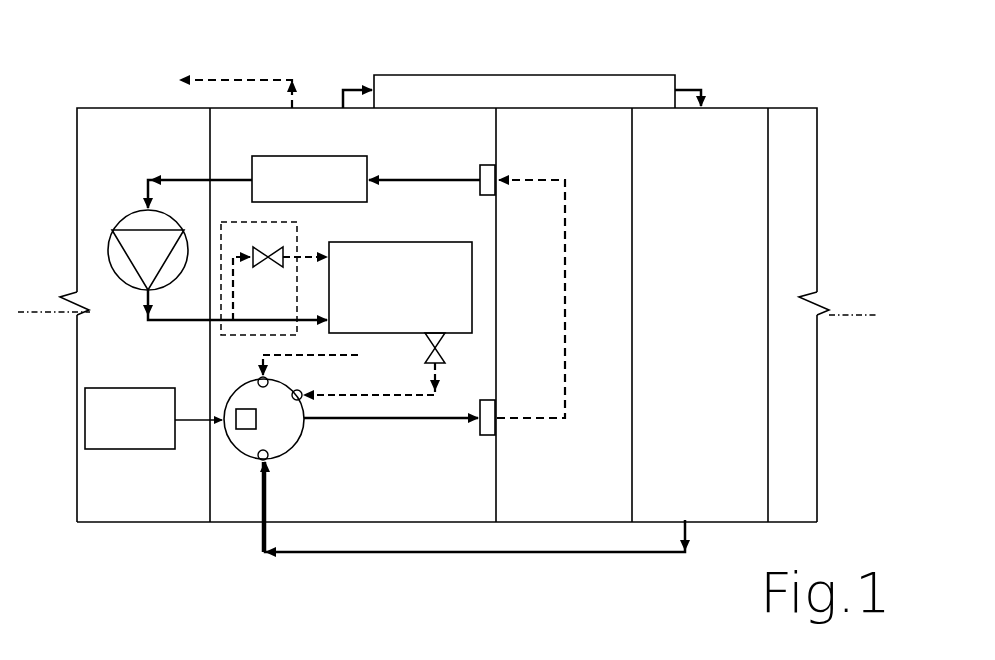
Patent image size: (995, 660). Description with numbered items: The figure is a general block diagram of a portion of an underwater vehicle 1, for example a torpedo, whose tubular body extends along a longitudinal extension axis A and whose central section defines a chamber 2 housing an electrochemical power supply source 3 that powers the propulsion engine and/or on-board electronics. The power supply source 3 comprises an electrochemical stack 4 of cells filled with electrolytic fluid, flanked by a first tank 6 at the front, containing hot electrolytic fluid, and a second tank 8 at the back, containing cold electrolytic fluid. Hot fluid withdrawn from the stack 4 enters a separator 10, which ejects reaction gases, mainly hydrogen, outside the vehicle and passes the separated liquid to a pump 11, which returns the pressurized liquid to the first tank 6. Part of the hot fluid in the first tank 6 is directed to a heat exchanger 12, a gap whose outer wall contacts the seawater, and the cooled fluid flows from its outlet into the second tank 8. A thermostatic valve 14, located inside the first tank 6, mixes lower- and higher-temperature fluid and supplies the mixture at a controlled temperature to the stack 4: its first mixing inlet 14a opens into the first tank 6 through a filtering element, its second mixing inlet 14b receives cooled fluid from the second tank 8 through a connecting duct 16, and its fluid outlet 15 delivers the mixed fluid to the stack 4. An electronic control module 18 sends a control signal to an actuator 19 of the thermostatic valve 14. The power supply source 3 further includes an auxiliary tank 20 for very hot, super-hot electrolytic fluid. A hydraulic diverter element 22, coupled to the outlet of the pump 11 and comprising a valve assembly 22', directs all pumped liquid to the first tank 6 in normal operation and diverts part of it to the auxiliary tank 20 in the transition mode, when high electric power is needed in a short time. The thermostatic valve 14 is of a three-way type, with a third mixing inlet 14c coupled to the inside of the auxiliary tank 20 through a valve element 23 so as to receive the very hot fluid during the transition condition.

The underwater vehicle 1 is at (423, 261).
The chamber 2 is at (228, 526).
The electrochemical power supply source 3 is at (315, 100).
The electrochemical stack 4 is at (608, 117).
The first tank 6 is at (391, 117).
The second tank 8 is at (745, 120).
The separator 10 is at (364, 160).
The pump 11 is at (122, 219).
The heat exchanger 12 is at (452, 82).
The thermostatic valve 14 is at (289, 446).
The first mixing inlet 14a is at (258, 380).
The second mixing inlet 14b is at (266, 460).
The third mixing inlet 14c is at (301, 392).
The fluid outlet 15 is at (311, 431).
The connecting duct 16 is at (345, 554).
The electronic control module 18 is at (118, 450).
The actuator 19 is at (246, 432).
The auxiliary tank 20 is at (447, 248).
The hydraulic diverter element 22 is at (258, 258).
The valve assembly 22' is at (294, 238).
The valve element 23 is at (444, 363).
The longitudinal extension axis A is at (848, 315).